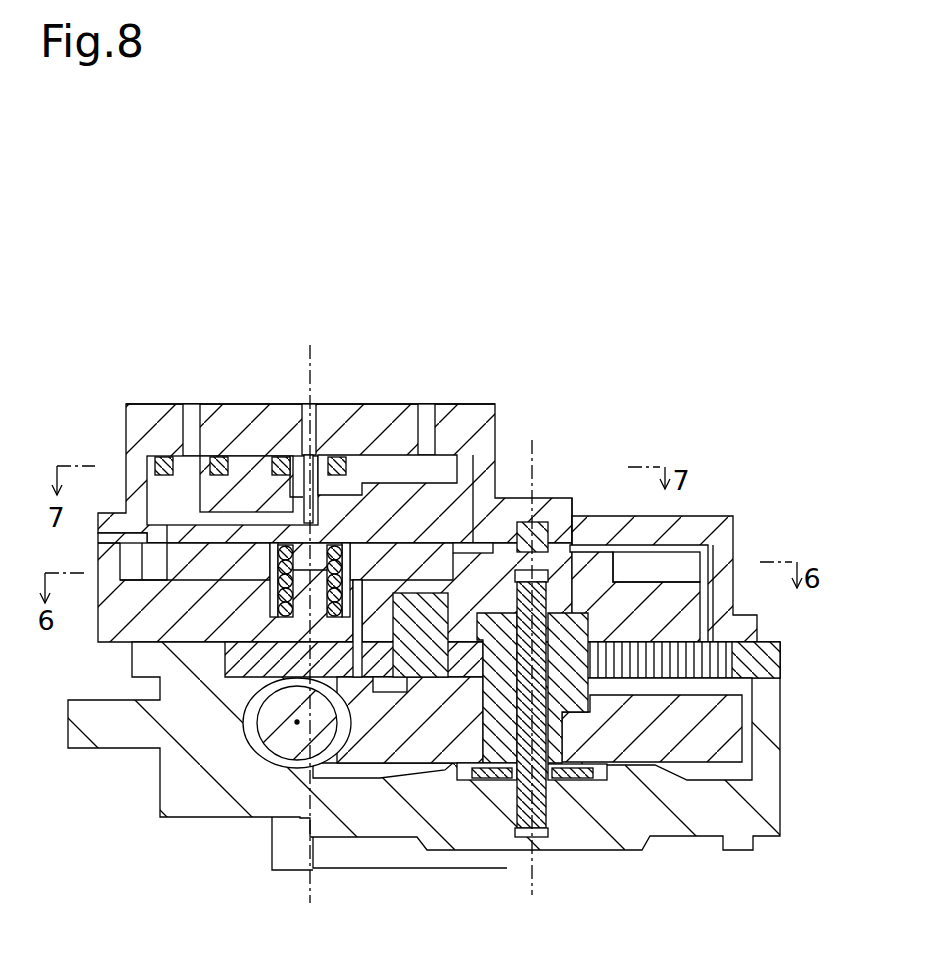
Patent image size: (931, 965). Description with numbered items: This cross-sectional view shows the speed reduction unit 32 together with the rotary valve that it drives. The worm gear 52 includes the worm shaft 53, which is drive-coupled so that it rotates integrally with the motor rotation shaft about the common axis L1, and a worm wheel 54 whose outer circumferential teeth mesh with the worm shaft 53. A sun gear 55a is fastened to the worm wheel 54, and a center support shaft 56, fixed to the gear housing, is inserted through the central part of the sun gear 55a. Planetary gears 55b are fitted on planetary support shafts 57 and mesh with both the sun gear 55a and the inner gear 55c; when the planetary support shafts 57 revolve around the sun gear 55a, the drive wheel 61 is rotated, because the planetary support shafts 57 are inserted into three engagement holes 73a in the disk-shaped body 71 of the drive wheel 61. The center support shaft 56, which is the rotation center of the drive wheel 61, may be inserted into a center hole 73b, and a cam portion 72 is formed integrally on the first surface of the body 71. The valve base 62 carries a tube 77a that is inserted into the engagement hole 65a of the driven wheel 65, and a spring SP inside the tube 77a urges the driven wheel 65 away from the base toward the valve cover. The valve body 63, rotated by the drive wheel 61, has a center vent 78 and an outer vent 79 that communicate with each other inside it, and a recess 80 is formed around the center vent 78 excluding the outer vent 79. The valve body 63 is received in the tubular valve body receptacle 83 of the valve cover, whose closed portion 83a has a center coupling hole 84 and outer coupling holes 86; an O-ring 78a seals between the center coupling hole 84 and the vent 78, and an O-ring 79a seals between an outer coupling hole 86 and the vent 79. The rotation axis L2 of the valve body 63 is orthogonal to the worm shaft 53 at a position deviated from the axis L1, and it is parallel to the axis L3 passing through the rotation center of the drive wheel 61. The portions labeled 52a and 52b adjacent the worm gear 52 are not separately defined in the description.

The valve body receptacle 83 is at (128, 432).
The closed portion 83a is at (150, 404).
The outer coupling holes 86 is at (192, 404).
The outer vent 79 is at (189, 527).
The O-ring 79a is at (218, 457).
The center coupling hole 84 is at (303, 410).
The center vent 78 is at (305, 502).
The O-ring 78a is at (340, 458).
The recess 80 is at (452, 465).
The driven wheel 65 is at (456, 569).
The engagement hole 65a is at (342, 543).
The valve base 62 is at (103, 620).
The valve body 63 is at (118, 542).
The tube 77a is at (272, 566).
The spring SP is at (283, 592).
The engagement holes 73a is at (402, 622).
The body 71 is at (726, 570).
The drive wheel 61 is at (726, 570).
The cam portion 72 is at (600, 563).
The worm gear 52 is at (168, 787).
The bearing bore 52a is at (258, 760).
The housing wall 52b is at (745, 775).
The worm shaft 53 is at (273, 760).
The speed reduction unit 32 is at (297, 815).
The planetary support shaft 57 is at (415, 695).
The worm wheel 54 is at (642, 750).
The sun gear 55a is at (574, 615).
The planetary gears 55b is at (488, 665).
The inner gear 55c is at (778, 660).
The center support shaft 56 is at (548, 817).
The center hole 73b is at (542, 545).
The axis L1 is at (295, 722).
The rotation axis L2 is at (313, 352).
The axis L3 is at (537, 447).